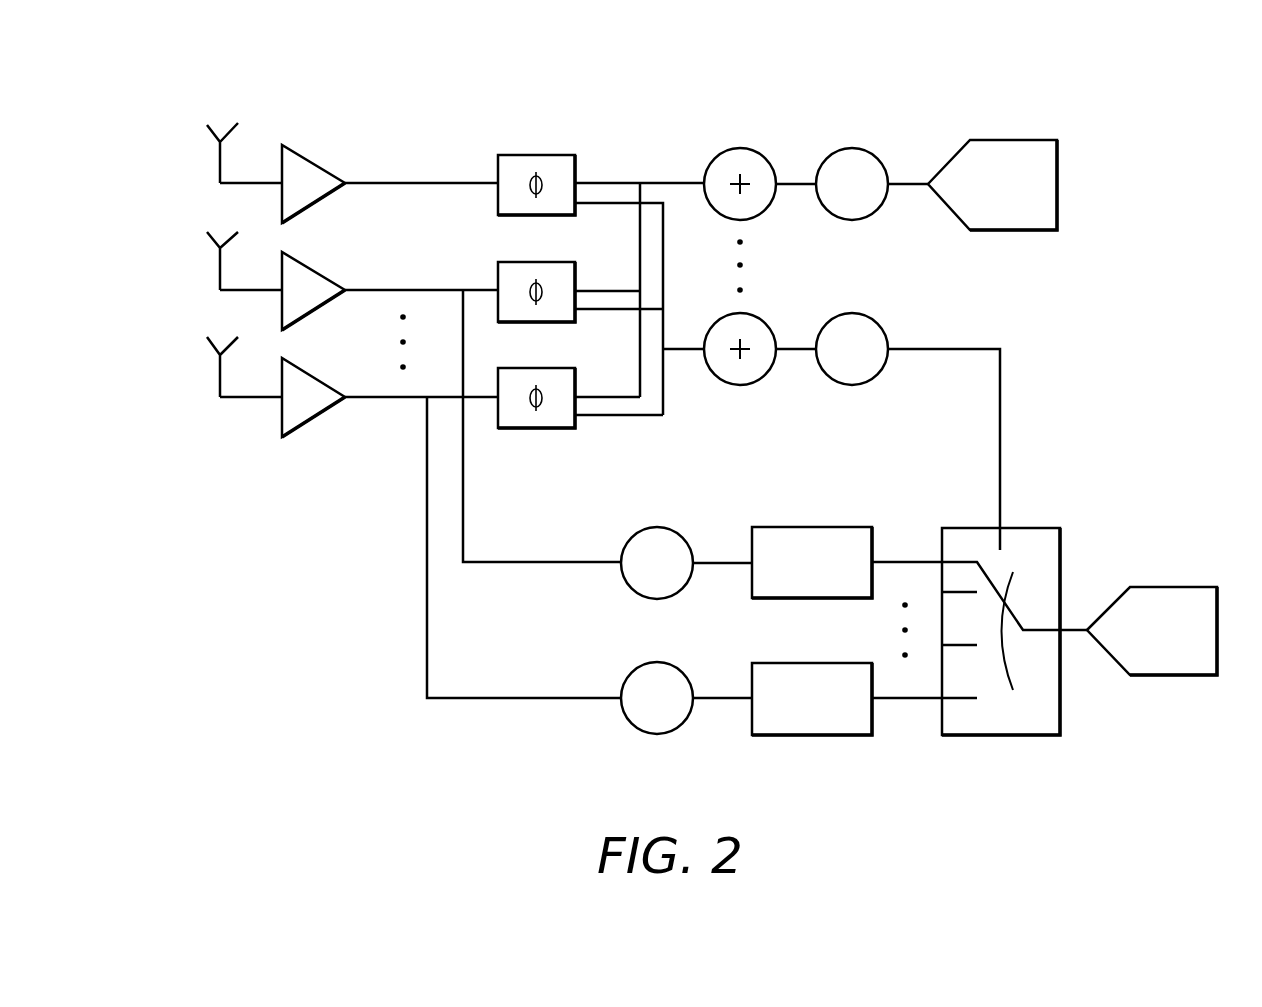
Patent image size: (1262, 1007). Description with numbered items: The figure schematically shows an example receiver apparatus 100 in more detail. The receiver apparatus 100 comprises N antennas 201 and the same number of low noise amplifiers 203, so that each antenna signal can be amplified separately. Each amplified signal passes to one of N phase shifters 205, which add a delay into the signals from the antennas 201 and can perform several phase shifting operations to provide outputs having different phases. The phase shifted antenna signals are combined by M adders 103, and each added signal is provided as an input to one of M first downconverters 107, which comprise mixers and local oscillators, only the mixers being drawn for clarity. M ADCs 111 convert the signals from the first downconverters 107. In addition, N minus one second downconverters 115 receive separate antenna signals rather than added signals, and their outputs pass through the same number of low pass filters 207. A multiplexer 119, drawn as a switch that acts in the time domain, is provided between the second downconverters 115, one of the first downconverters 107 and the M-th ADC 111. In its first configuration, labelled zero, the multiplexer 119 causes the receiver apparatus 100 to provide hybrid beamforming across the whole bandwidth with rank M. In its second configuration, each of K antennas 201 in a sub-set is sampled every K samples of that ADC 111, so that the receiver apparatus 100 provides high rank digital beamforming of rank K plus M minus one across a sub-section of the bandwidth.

The receiver apparatus 100 is at (240, 75).
The antenna 201 is at (207, 344).
The low noise amplifier 203 is at (313, 162).
The phase shifter 205 is at (537, 463).
The adder 103 is at (742, 422).
The first downconverter 107 is at (853, 422).
The ADC 111 is at (1175, 587).
The second downconverter 115 is at (658, 768).
The low pass filter 207 is at (825, 768).
The multiplexer 119 is at (1020, 736).